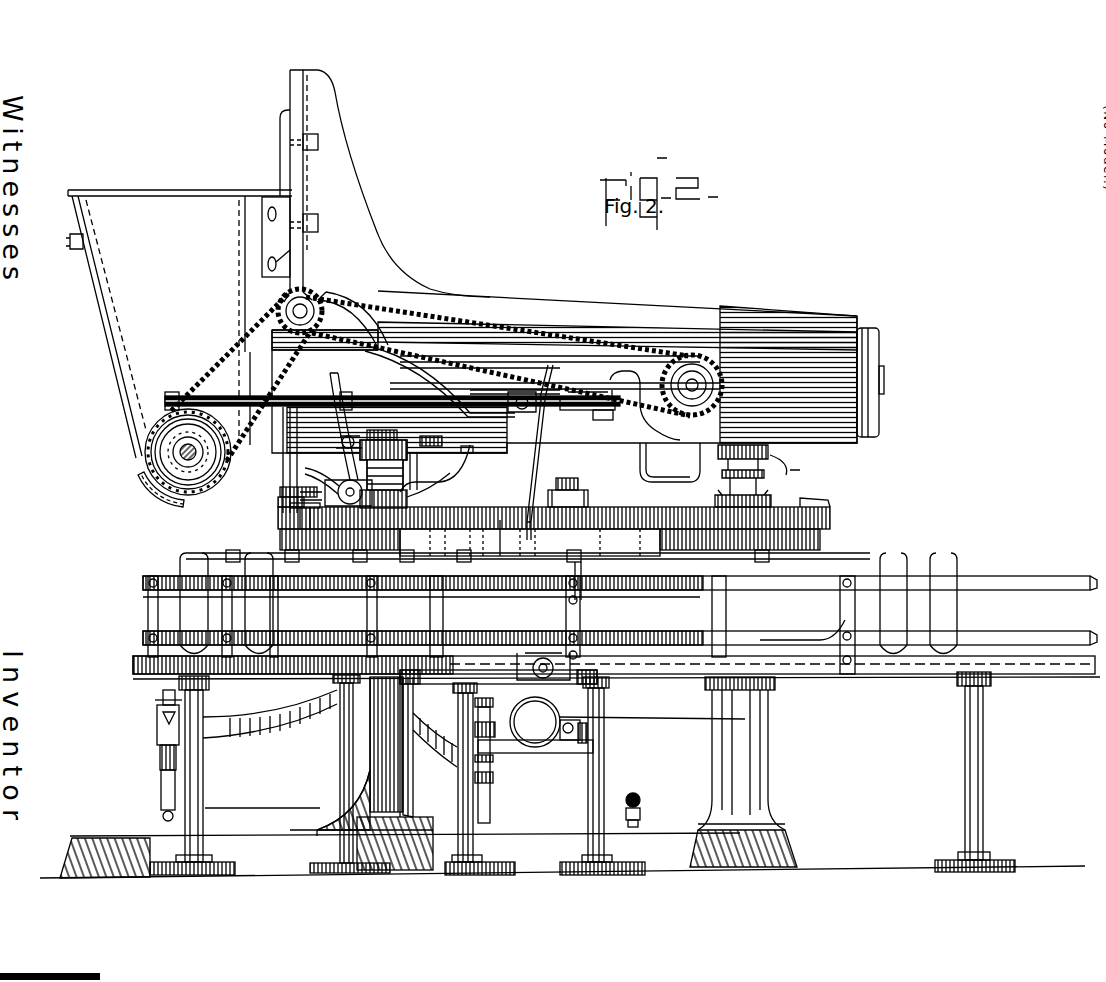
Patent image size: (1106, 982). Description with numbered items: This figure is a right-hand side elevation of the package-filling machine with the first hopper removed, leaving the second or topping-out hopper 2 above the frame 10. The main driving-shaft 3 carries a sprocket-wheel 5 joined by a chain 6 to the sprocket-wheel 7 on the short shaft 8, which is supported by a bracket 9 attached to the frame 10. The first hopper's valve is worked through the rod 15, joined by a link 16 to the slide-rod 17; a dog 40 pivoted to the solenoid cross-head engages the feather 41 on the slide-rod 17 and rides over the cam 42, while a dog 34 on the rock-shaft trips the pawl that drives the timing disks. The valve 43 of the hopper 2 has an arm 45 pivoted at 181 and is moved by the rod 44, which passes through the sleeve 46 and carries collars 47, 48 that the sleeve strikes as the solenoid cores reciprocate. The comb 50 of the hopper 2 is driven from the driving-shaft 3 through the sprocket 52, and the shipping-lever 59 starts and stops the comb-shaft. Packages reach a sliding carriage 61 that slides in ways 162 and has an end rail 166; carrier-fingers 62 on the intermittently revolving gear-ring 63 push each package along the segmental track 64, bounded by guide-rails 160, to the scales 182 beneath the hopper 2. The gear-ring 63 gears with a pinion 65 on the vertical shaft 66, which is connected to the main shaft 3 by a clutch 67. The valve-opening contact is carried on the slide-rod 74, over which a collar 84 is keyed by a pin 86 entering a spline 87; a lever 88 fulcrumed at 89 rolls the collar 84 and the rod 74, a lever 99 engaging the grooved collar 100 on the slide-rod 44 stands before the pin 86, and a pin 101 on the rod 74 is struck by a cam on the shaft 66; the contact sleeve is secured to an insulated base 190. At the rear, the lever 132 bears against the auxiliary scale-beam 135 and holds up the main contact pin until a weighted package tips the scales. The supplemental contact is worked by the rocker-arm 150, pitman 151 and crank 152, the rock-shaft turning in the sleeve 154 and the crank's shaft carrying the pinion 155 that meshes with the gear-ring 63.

The second hopper 2 is at (182, 200).
The main driving-shaft 3 is at (305, 306).
The sprocket-wheel 5 is at (335, 322).
The chain 6 is at (458, 312).
The sprocket-wheel 7 is at (712, 388).
The short shaft 8 is at (702, 372).
The bracket 9 is at (663, 438).
The frame 10 is at (567, 372).
The rod 15 is at (468, 450).
The link 16 is at (518, 412).
The slide-rod 17 is at (538, 412).
The dog 34 is at (722, 412).
The dog 40 is at (560, 412).
The feather 41 is at (552, 390).
The cam 42 is at (600, 420).
The valve 43 is at (138, 486).
The rod 44 is at (215, 392).
The arm 45 is at (185, 440).
The sleeve 46 is at (528, 388).
The collar 47 is at (488, 396).
The collar 48 is at (634, 378).
The comb 50 is at (225, 346).
The sprocket 52 is at (228, 488).
The shipping-lever 59 is at (376, 337).
The sliding carriage 61 is at (447, 683).
The carrier-fingers 62 is at (182, 556).
The gear-ring 63 is at (832, 514).
The segmental track 64 is at (258, 674).
The pinion 65 is at (285, 515).
The vertical shaft 66 is at (325, 495).
The clutch 67 is at (284, 346).
The slide-rod 74 is at (365, 460).
The collar 84 is at (408, 500).
The pin 86 is at (328, 480).
The spline 87 is at (300, 500).
The lever 88 is at (440, 530).
The fulcrum 89 is at (365, 583).
The lever 99 is at (346, 436).
The grooved collar 100 is at (331, 395).
The pin 101 is at (305, 530).
The lever 132 is at (840, 636).
The auxiliary scale-beam 135 is at (660, 720).
The rocker-arm 150 is at (538, 478).
The pitman 151 is at (570, 480).
The crank 152 is at (588, 497).
The sleeve 154 is at (528, 505).
The pinion 155 is at (575, 556).
The guide-rails 160 is at (150, 585).
The ways 162 is at (330, 696).
The end rail 166 is at (468, 590).
The pivot 181 is at (180, 452).
The scales 182 is at (160, 690).
The insulated base 190 is at (338, 488).